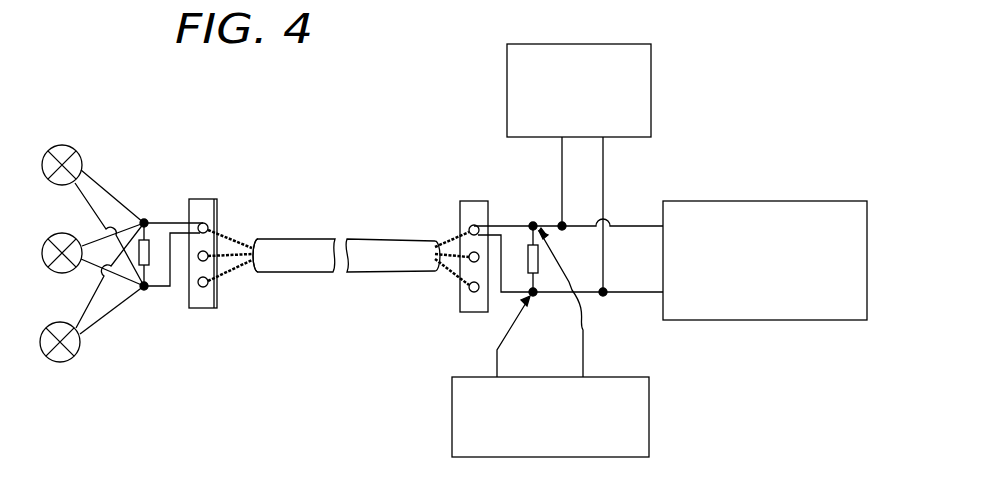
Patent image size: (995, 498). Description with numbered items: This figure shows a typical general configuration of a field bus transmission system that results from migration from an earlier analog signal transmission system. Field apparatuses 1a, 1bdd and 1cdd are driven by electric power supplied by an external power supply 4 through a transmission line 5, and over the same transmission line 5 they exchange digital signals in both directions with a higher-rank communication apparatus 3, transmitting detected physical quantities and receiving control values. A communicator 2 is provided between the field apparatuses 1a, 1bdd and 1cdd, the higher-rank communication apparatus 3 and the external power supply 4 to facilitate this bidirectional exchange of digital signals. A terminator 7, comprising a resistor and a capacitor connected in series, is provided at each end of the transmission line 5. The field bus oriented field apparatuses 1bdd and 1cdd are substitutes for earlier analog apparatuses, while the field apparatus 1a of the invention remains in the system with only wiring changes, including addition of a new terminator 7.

The field apparatus 1a is at (45, 150).
The field bus oriented field apparatus 1bdd is at (46, 237).
The field bus oriented field apparatus 1cdd is at (45, 326).
The communicator 2 is at (649, 412).
The higher-rank communication apparatus 3 is at (756, 201).
The external power supply 4 is at (507, 73).
The transmission line 5 is at (287, 238).
The terminator 7 is at (147, 240).